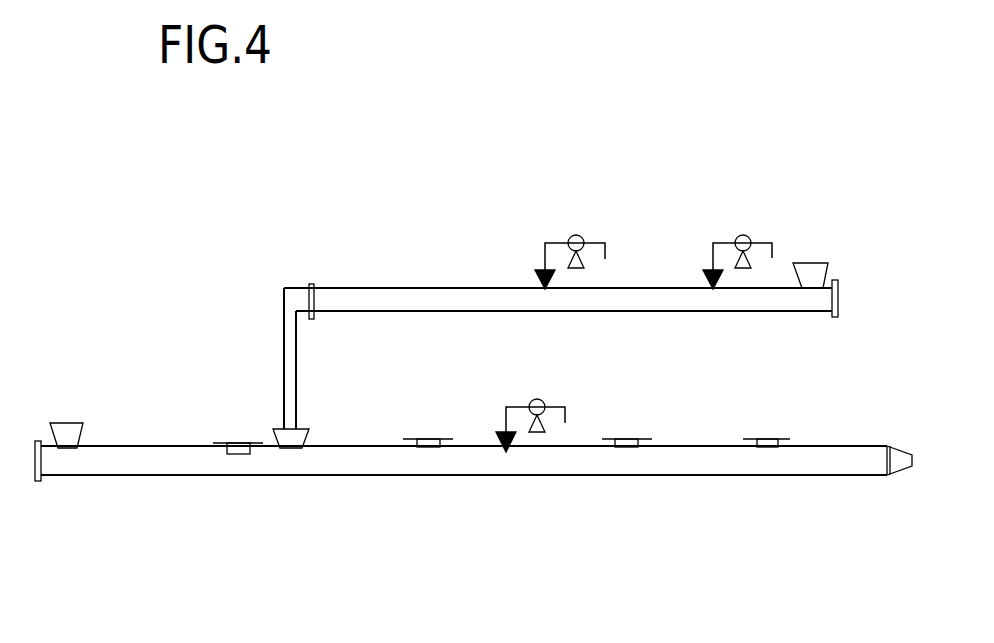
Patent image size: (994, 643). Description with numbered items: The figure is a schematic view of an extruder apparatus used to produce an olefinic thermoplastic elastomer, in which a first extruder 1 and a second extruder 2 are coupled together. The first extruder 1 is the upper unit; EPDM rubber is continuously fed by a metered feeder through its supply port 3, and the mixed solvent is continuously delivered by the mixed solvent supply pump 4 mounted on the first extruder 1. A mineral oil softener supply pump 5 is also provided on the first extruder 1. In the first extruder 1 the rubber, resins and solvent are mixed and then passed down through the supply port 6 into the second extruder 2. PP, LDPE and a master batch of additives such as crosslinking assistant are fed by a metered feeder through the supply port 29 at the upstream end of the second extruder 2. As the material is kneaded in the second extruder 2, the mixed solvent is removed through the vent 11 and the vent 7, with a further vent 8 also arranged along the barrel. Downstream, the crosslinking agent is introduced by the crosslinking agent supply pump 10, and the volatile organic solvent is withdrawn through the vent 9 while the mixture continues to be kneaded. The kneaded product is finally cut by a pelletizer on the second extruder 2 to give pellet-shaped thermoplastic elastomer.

The first extruder 1 is at (561, 320).
The second extruder 2 is at (473, 496).
The supply port 3 is at (822, 230).
The mixed solvent (B) supply pump 4 is at (732, 207).
The mineral oil softener (D) supply pump 5 is at (562, 204).
The supply port 6 is at (319, 403).
The vent 7 is at (443, 397).
The vent 8 is at (647, 404).
The vent 9 is at (777, 396).
The crosslinking agent (E) supply pump 10 is at (578, 391).
The vent 11 is at (233, 395).
The supply port 29 is at (95, 390).